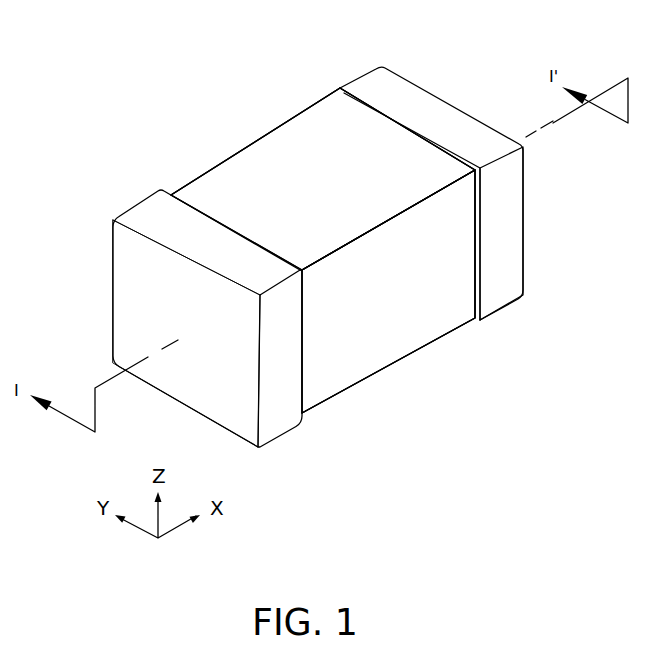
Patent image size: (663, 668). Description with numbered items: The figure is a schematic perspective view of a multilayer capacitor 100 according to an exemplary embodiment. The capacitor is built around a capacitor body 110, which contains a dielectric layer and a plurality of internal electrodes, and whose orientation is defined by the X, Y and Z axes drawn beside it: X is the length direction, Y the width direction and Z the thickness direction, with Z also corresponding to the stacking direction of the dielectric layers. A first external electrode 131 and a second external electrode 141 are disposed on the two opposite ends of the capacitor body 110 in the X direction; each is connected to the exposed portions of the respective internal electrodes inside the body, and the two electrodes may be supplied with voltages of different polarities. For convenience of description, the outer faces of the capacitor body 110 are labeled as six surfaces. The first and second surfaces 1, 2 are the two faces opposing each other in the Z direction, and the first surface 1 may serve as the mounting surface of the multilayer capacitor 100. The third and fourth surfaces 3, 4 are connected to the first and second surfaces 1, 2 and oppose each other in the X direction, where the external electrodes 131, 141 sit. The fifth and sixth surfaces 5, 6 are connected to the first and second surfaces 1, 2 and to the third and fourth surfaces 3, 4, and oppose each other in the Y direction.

The multilayer capacitor 100 is at (173, 45).
The capacitor body 110 is at (393, 150).
The first external electrode 131 is at (135, 283).
The second external electrode 141 is at (492, 243).
The first surface 1 is at (325, 352).
The second surface 2 is at (330, 143).
The third surface 3 is at (138, 332).
The fourth surface 4 is at (508, 203).
The fifth surface 5 is at (275, 175).
The sixth surface 6 is at (378, 320).